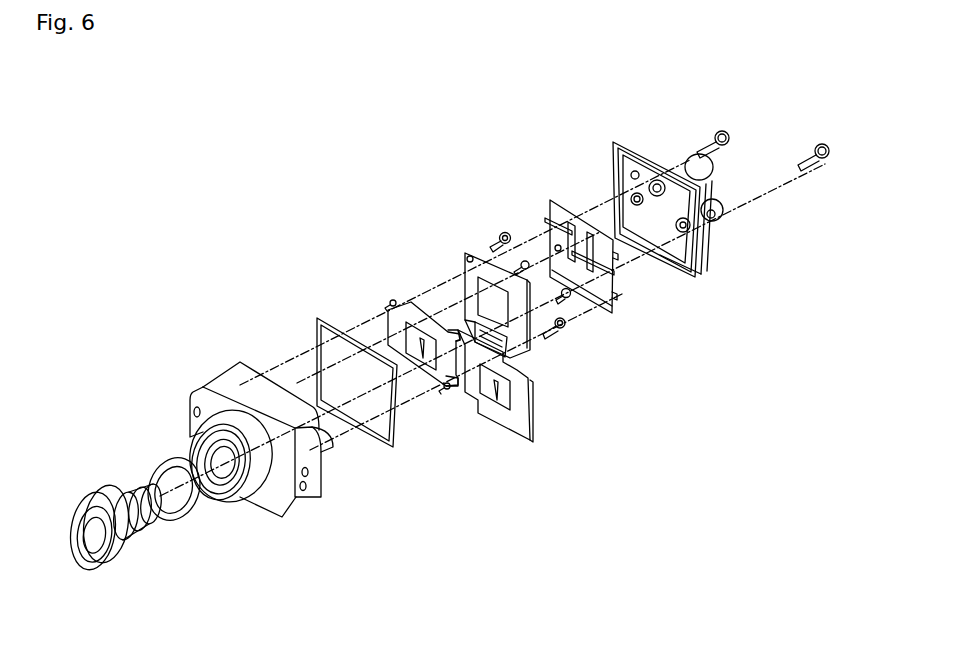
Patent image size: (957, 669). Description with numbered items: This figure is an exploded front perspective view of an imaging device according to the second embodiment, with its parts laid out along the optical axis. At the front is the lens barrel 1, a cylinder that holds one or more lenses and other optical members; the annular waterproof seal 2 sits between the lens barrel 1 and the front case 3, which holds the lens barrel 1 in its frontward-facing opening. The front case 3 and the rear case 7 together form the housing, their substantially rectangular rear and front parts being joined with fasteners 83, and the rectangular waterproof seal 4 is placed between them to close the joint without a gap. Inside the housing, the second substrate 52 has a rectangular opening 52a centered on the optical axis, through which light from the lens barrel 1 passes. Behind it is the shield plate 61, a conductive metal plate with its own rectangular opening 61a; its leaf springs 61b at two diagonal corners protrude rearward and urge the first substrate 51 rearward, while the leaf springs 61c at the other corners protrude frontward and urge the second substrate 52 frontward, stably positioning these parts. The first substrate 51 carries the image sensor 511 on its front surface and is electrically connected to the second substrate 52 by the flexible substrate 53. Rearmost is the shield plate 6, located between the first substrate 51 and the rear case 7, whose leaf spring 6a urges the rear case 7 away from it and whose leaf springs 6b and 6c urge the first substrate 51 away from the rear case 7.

The lens barrel 1 is at (82, 494).
The waterproof seal 2 is at (158, 460).
The front case 3 is at (236, 377).
The waterproof seal 4 is at (337, 322).
The shield plate 61 is at (415, 359).
The opening 61a is at (421, 350).
The leaf springs 61b is at (448, 330).
The leaf springs 61c is at (388, 303).
The first substrate 51 is at (468, 259).
The image sensor 511 is at (486, 290).
The second substrate 52 is at (507, 432).
The opening 52a is at (494, 392).
The flexible substrate 53 is at (548, 338).
The shield plate 6 is at (595, 258).
The leaf spring 6a is at (598, 300).
The leaf spring 6b is at (555, 208).
The leaf spring 6c is at (612, 300).
The rear case 7 is at (642, 140).
The fasteners 83 is at (716, 128).